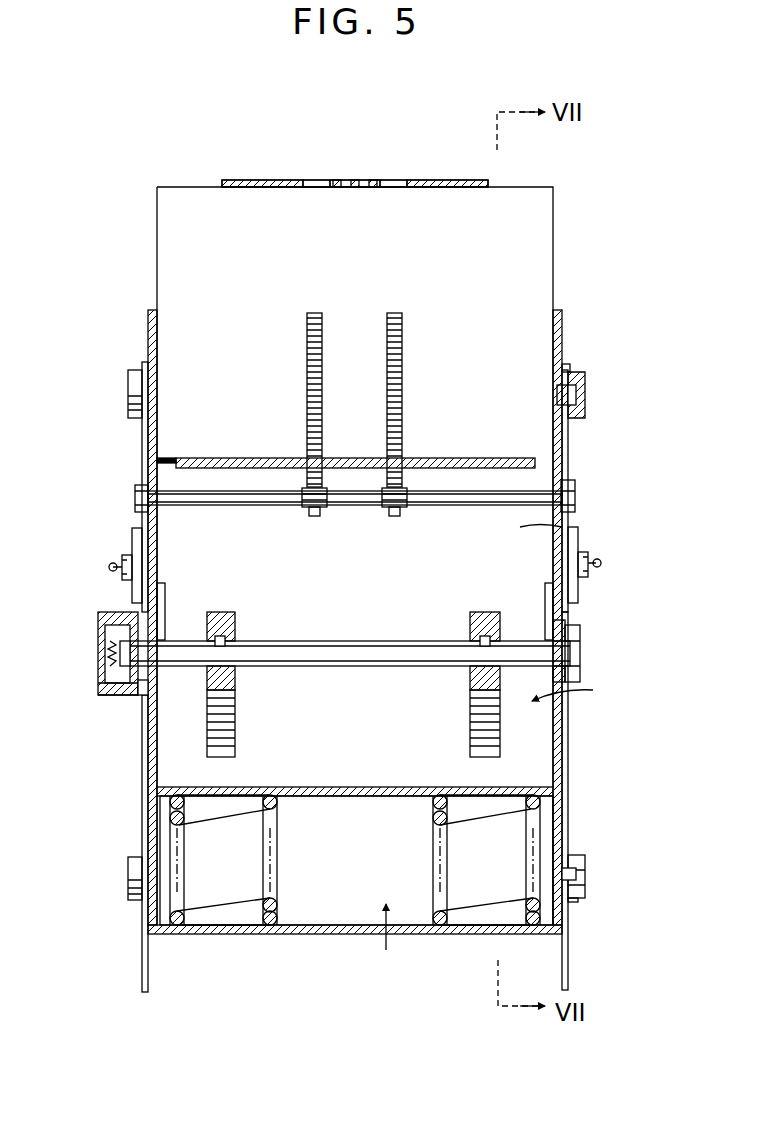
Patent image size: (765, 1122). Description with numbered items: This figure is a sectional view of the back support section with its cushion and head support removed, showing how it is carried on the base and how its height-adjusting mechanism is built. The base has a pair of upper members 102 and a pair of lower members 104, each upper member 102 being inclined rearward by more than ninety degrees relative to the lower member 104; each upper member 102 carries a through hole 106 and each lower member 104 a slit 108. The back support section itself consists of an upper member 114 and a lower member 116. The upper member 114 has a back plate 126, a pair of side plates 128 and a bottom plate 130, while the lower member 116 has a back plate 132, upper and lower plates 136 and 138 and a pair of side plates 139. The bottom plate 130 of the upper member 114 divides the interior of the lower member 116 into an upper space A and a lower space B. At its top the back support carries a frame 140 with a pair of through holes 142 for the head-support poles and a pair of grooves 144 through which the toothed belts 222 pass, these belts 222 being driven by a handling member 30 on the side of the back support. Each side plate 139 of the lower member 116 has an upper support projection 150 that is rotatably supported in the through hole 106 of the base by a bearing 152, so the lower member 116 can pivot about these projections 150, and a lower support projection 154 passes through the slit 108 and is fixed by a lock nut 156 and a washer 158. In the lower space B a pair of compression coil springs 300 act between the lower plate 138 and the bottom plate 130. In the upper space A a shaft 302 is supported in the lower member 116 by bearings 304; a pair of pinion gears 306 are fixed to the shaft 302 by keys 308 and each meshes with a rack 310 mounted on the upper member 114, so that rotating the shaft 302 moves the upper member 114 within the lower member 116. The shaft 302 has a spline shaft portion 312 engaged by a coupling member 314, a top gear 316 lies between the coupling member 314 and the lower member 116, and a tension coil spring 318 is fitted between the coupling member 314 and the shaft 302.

The handling member 30 is at (135, 497).
The upper member 102 is at (143, 443).
The lower member 104 is at (142, 966).
The through hole 106 is at (136, 370).
The slit 108 is at (570, 852).
The upper member 114 is at (536, 185).
The lower member 116 is at (232, 937).
The back plate 126 is at (570, 527).
The side plates 128 is at (148, 768).
The bottom plate 130 is at (345, 787).
The back plate 132 is at (292, 918).
The upper plate 136 is at (478, 458).
The lower plate 138 is at (322, 935).
The side plates 139 is at (152, 818).
The frame 140 is at (462, 180).
The through holes 142 is at (371, 180).
The grooves 144 is at (314, 180).
The upper support projection 150 is at (586, 392).
The bearing 152 is at (567, 366).
The lower support projection 154 is at (586, 866).
The lock nut 156 is at (128, 880).
The washer 158 is at (578, 902).
The belt with teeth 222 is at (307, 386).
The compression coil springs 300 is at (178, 926).
The shaft 302 is at (340, 641).
The bearings 304 is at (581, 645).
The pinion gears 306 is at (235, 680).
The keys 308 is at (268, 620).
The rack 310 is at (235, 735).
The spline shaft portion 312 is at (98, 630).
The coupling member 314 is at (98, 686).
The top gear 316 is at (140, 695).
The tension coil spring 318 is at (106, 655).
The upper space A is at (572, 692).
The lower space B is at (378, 943).